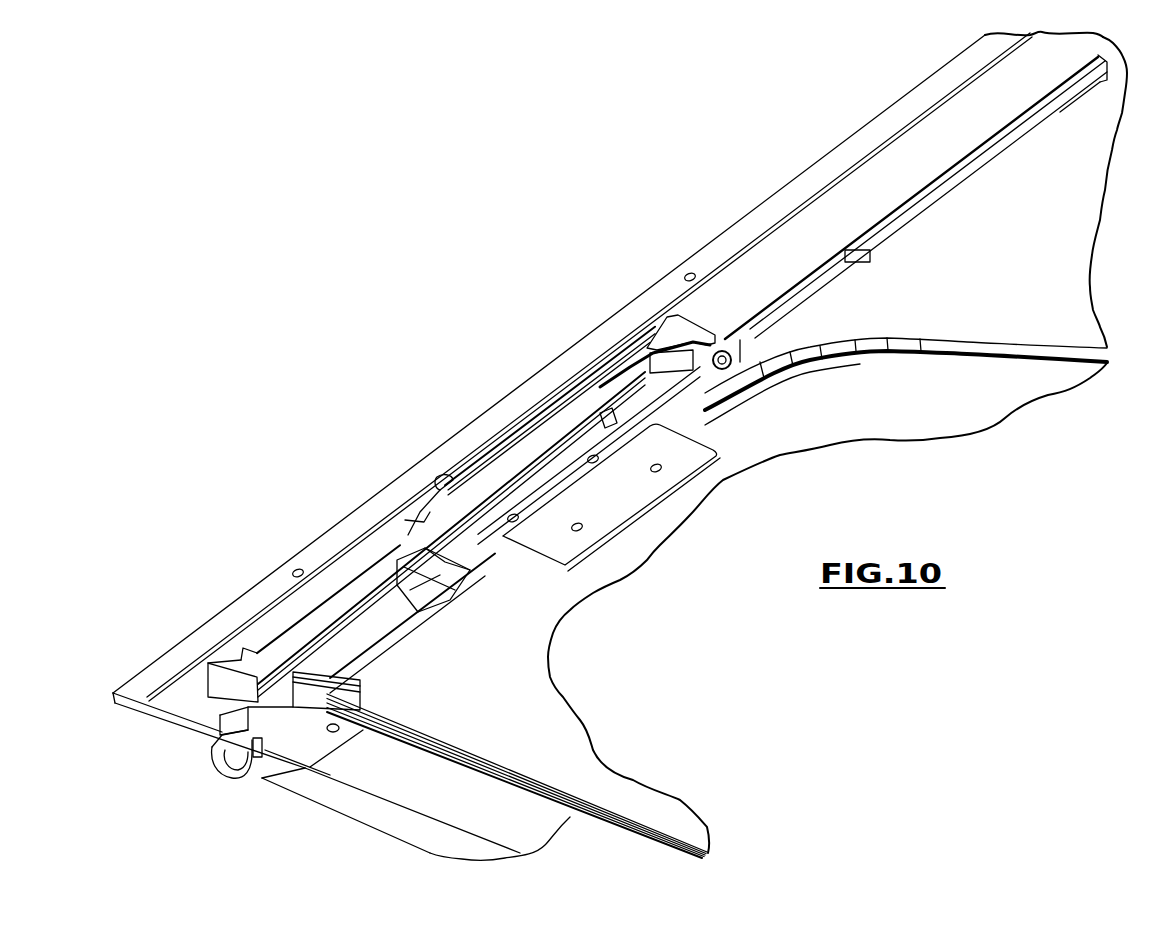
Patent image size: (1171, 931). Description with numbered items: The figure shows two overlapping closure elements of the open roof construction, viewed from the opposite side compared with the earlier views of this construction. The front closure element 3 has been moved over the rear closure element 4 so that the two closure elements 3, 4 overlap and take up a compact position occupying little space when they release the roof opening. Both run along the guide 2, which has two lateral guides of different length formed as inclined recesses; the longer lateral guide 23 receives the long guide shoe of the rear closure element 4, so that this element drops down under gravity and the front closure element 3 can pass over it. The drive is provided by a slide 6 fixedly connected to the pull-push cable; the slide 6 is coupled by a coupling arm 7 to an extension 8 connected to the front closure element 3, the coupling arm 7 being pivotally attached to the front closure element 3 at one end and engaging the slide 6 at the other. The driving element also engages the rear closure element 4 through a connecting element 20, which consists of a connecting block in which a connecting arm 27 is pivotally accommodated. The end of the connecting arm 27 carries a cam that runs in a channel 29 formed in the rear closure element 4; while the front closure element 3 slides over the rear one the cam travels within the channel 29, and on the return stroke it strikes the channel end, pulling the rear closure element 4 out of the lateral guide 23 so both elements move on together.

The guide 2 is at (902, 122).
The front closure element 3 is at (817, 383).
The rear closure element 4 is at (473, 795).
The slide 6 is at (672, 333).
The coupling arm 7 is at (487, 490).
The extension 8 is at (628, 462).
The connecting element 20 is at (357, 648).
The lateral guide 23 is at (417, 590).
The connecting arm 27 is at (278, 717).
The channel 29 is at (255, 767).